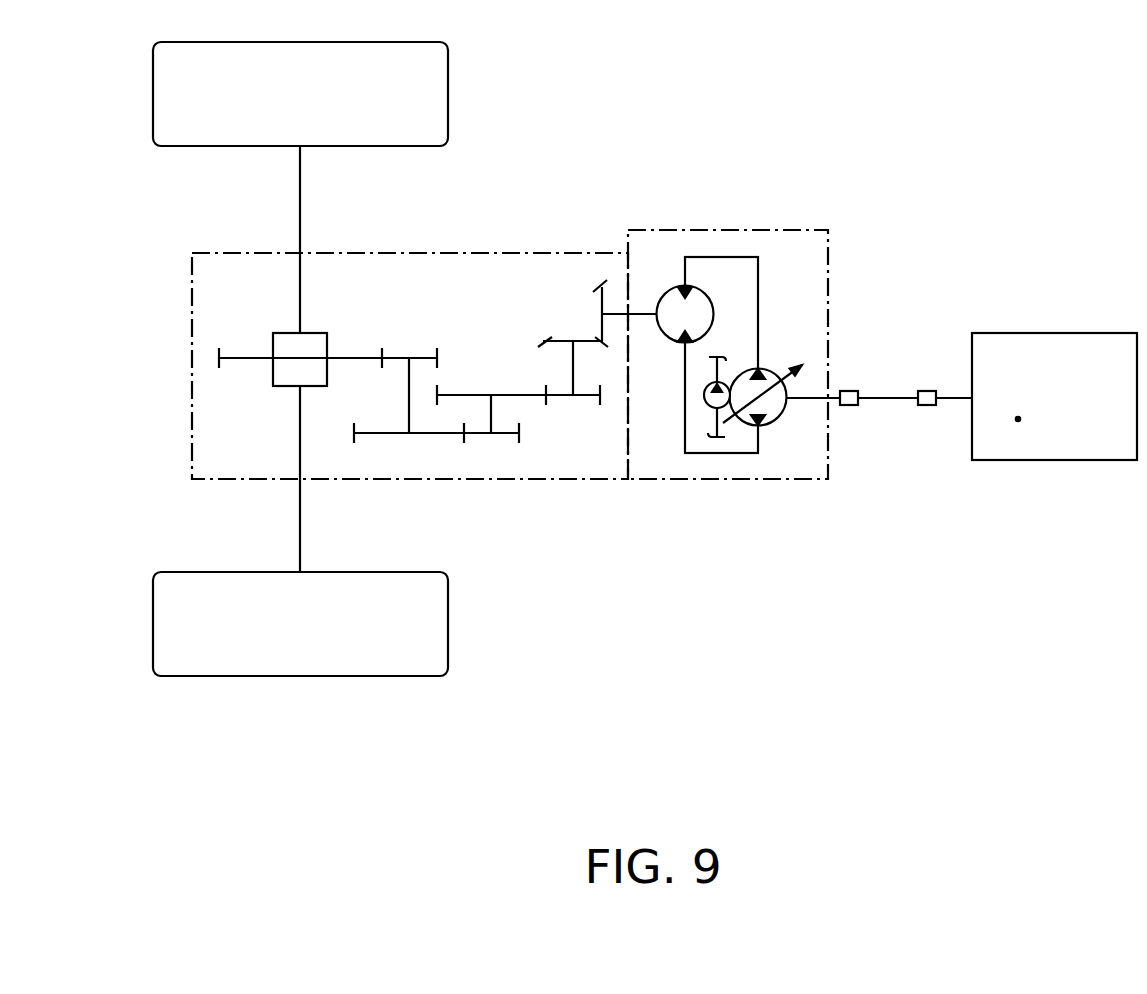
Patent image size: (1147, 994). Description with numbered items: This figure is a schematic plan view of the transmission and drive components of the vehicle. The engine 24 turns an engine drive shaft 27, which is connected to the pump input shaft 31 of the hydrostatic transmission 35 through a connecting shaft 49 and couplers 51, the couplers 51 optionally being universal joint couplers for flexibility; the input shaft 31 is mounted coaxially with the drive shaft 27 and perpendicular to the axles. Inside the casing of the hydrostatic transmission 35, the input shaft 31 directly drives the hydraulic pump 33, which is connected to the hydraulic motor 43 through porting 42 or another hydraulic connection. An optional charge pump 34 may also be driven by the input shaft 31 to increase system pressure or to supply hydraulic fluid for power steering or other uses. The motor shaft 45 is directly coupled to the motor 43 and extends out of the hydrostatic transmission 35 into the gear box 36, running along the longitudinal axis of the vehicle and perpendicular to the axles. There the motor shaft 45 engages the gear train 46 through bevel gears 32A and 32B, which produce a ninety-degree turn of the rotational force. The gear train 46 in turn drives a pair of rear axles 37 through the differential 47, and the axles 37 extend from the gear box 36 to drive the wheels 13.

The drive wheels 13 is at (278, 108).
The rear axles 37 is at (298, 187).
The differential 47 is at (287, 332).
The gear box 36 is at (603, 481).
The gear train 46 is at (454, 458).
The bevel gear 32B is at (543, 341).
The bevel gear 32A is at (597, 290).
The motor shaft 45 is at (642, 314).
The hydrostatic transmission 35 is at (802, 229).
The porting 42 is at (758, 320).
The hydraulic motor 43 is at (712, 287).
The hydraulic pump 33 is at (790, 421).
The charge pump 34 is at (704, 406).
The pump input shaft 31 is at (812, 397).
The connecting shaft 49 is at (880, 392).
The engine drive shaft 27 is at (953, 392).
The couplers 51 is at (849, 405).
The engine 24 is at (1030, 411).